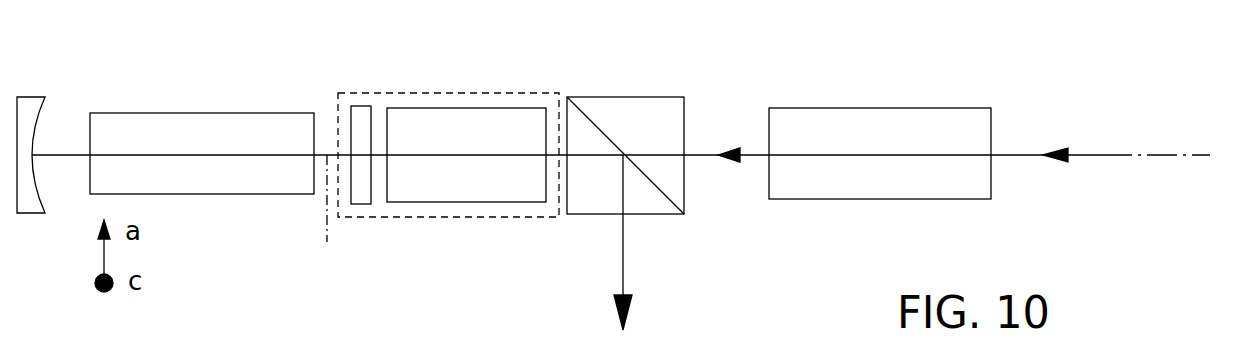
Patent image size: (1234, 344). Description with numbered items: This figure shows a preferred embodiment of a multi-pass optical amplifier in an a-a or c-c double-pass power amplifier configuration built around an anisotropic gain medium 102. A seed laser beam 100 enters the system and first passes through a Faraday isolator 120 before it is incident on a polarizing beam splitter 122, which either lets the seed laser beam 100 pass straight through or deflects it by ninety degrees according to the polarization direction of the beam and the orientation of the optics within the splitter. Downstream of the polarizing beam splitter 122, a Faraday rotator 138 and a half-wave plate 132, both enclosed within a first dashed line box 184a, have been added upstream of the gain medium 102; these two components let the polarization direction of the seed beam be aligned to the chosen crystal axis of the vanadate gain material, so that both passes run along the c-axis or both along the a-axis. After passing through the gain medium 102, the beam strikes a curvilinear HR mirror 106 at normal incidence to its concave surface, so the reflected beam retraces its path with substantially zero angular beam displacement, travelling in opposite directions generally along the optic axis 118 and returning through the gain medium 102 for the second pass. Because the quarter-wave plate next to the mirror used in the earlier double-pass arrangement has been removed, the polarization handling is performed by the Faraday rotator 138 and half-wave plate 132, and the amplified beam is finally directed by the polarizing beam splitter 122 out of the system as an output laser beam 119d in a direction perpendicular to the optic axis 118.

The seed laser beam 100 is at (1025, 158).
The anisotropic gain medium 102 is at (134, 130).
The curvilinear HR mirror 106 is at (33, 110).
The optic axis 118 is at (1165, 193).
The output laser beam 119d is at (624, 257).
The Faraday isolator 120 is at (793, 123).
The polarizing beam splitter 122 is at (640, 122).
The half-wave plate 132 is at (355, 115).
The Faraday rotator 138 is at (528, 125).
The first dashed line box 184a is at (423, 90).